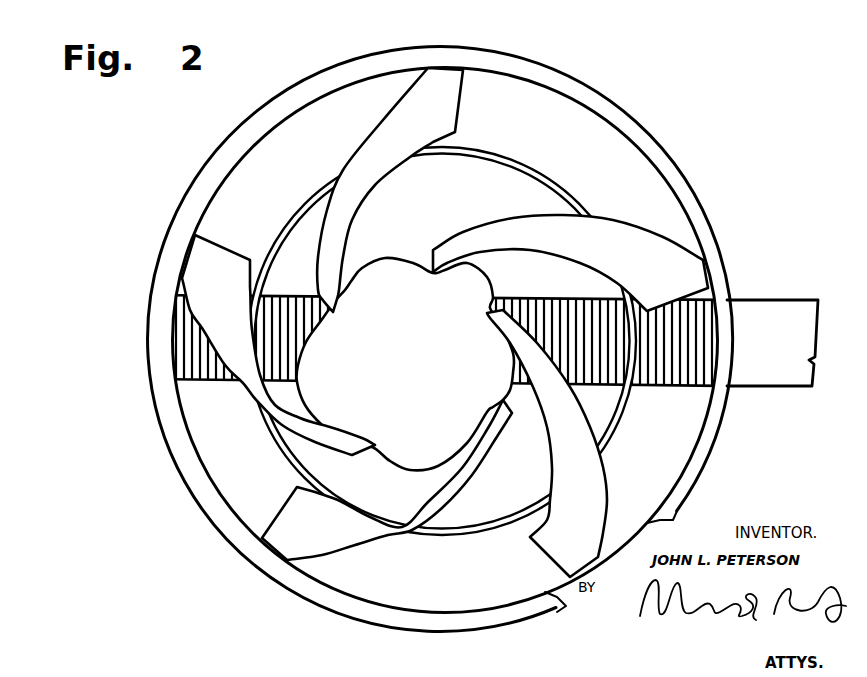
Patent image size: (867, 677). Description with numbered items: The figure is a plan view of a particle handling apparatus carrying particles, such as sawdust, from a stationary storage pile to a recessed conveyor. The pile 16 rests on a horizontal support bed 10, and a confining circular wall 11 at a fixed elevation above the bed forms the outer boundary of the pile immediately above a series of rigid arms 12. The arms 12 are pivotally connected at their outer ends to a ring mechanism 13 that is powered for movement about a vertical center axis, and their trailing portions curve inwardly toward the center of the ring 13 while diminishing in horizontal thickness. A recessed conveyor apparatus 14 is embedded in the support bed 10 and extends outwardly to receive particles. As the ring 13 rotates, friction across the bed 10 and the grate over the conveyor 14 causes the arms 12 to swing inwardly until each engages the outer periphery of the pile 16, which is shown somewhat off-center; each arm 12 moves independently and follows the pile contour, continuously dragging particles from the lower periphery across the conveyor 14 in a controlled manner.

The support bed 10 is at (425, 216).
The confining circular wall 11 is at (519, 159).
The rigid arms 12 is at (455, 110).
The ring mechanism 13 is at (634, 128).
The recessed conveyor apparatus 14 is at (552, 310).
The storage pile 16 is at (397, 361).